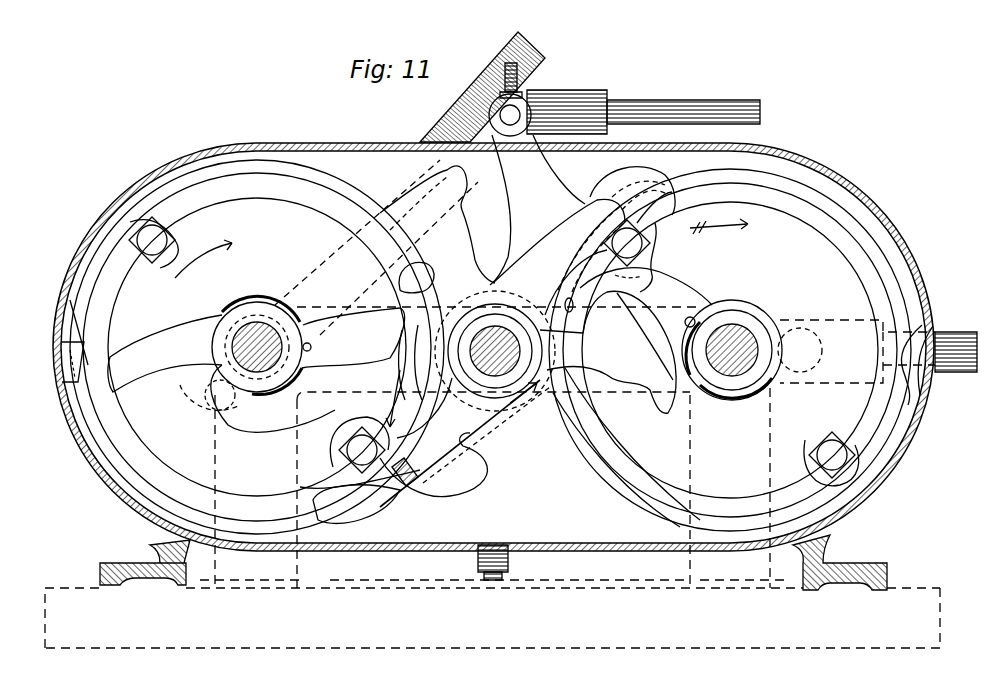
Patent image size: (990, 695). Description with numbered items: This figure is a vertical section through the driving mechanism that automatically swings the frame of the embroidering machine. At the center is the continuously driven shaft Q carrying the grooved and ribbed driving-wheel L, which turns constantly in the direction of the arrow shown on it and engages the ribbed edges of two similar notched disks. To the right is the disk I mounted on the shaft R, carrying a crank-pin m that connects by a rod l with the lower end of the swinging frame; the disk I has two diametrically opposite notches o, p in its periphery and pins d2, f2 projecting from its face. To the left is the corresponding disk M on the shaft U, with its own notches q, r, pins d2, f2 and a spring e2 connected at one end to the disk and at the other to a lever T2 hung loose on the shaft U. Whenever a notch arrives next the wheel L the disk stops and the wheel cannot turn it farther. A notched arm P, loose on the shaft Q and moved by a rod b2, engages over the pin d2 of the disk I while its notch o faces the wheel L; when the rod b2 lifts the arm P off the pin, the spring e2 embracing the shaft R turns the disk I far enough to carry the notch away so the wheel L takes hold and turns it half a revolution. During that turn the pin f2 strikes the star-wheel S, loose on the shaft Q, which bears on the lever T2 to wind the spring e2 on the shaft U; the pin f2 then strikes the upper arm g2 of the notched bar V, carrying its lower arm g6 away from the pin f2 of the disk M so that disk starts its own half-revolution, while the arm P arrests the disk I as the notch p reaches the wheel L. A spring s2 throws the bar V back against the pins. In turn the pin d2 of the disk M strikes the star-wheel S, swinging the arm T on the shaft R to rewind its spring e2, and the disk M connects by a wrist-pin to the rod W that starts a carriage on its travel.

The disk M is at (257, 347).
The disk I is at (730, 350).
The pin d2 is at (389, 247).
The pin f2 is at (594, 451).
The shaft U is at (257, 347).
The spring e2 is at (501, 339).
The lever T2 is at (256, 370).
The notch q is at (80, 341).
The shaft Q is at (495, 351).
The shaft R is at (732, 350).
The crank-pin m is at (800, 350).
The notched arm P is at (537, 174).
The rod W is at (482, 87).
The rod b2 is at (643, 111).
The star-wheel S is at (540, 346).
The notched bar V is at (512, 345).
The upper arm g2 is at (613, 236).
The lower arm g6 is at (360, 495).
The spring s2 is at (456, 462).
The notch r is at (404, 376).
The driving-wheel L is at (460, 443).
The arm T is at (621, 351).
The notch o is at (565, 308).
The rod l is at (956, 340).
The notch p is at (917, 365).